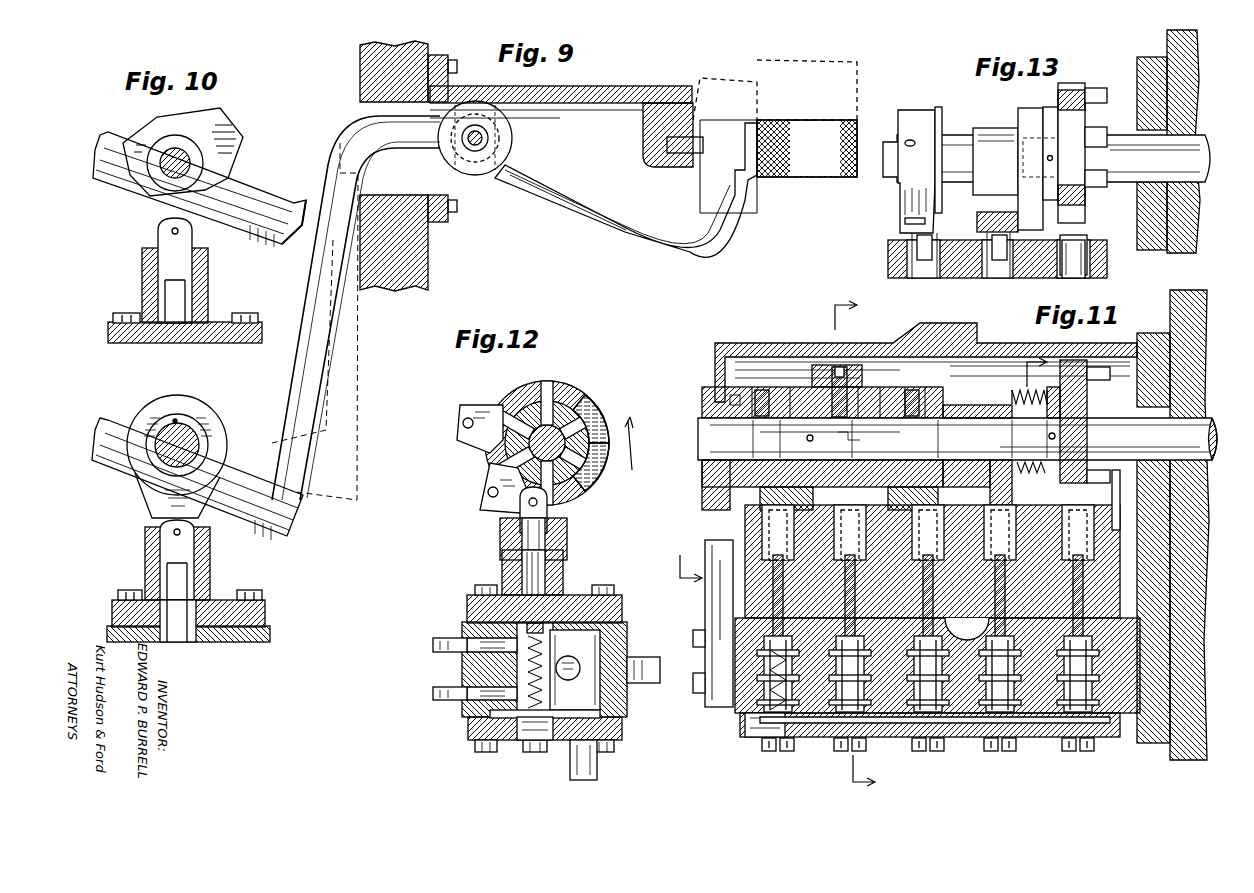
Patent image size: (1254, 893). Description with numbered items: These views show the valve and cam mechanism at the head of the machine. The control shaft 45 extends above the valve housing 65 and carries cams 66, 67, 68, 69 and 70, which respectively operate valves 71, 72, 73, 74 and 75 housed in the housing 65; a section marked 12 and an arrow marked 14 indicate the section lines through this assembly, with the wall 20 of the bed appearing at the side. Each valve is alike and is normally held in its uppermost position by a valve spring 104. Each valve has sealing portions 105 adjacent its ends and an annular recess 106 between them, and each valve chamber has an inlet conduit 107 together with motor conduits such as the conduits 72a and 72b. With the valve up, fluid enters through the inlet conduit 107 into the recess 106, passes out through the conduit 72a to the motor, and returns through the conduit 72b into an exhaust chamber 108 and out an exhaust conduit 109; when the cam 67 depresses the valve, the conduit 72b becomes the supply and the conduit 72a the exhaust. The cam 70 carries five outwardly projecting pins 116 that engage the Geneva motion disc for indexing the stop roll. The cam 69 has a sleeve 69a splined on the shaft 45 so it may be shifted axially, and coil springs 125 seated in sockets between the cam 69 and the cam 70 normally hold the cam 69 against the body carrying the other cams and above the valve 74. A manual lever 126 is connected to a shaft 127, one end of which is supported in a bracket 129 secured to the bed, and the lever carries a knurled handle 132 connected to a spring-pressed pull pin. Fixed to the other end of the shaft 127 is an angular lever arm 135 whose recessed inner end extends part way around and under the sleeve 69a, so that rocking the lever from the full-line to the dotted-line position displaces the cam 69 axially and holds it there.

In FIG. 11, the section line 12- 12 is at (860, 537).
In FIG. 11, the section line 14- 14 is at (863, 481).
In FIG. 9, the wall 20 is at (360, 62).
In FIG. 13, the wall 20 is at (1205, 243).
In FIG. 11, the wall 20 is at (1197, 563).
In FIG. 10, the control shaft 45 is at (157, 183).
In FIG. 9, the control shaft 45 is at (188, 433).
In FIG. 13, the control shaft 45 is at (1197, 137).
In FIG. 11, the control shaft 45 is at (1213, 403).
In FIG. 12, the control shaft 45 is at (487, 453).
In FIG. 10, the valve housing 65 is at (205, 291).
In FIG. 9, the valve housing 65 is at (212, 576).
In FIG. 13, the valve housing 65 is at (888, 260).
In FIG. 11, the valve housing 65 is at (743, 605).
In FIG. 11, the cam 66 is at (762, 493).
In FIG. 11, the cam 67 is at (865, 372).
In FIG. 12, the cam 67 is at (553, 367).
In FIG. 13, the cam 68 is at (903, 220).
In FIG. 11, the cam 68 is at (893, 500).
In FIG. 10, the cam 69 is at (212, 112).
In FIG. 9, the cam 69 is at (147, 493).
In FIG. 13, the cam 69 is at (1033, 223).
In FIG. 11, the cam 69 is at (990, 492).
In FIG. 9, the sleeve 69a is at (175, 420).
In FIG. 13, the sleeve 69a is at (988, 130).
In FIG. 11, the sleeve 69a is at (962, 400).
In FIG. 13, the cam 70 is at (1070, 87).
In FIG. 11, the cam 70 is at (1090, 390).
In FIG. 11, the valve 71 is at (798, 616).
In FIG. 11, the valve 72 is at (872, 616).
In FIG. 12, the valve 72 is at (570, 598).
In FIG. 12, the conduit 72a is at (433, 645).
In FIG. 12, the conduit 72b is at (433, 694).
In FIG. 13, the valve 73 is at (925, 270).
In FIG. 11, the valve 73 is at (950, 616).
In FIG. 10, the valve 74 is at (170, 276).
In FIG. 9, the valve 74 is at (170, 565).
In FIG. 13, the valve 74 is at (995, 270).
In FIG. 11, the valve 74 is at (1022, 616).
In FIG. 13, the valve 75 is at (1070, 260).
In FIG. 11, the valve 75 is at (1100, 618).
In FIG. 11, the valve spring 104 is at (738, 722).
In FIG. 12, the valve spring 104 is at (520, 742).
In FIG. 12, the sealing portion 105 is at (463, 630).
In FIG. 12, the annular recess 106 is at (578, 662).
In FIG. 12, the inlet conduit 107 is at (643, 657).
In FIG. 11, the exhaust chamber 108 is at (963, 737).
In FIG. 12, the exhaust chamber 108 is at (600, 714).
In FIG. 12, the exhaust conduit 109 is at (597, 762).
In FIG. 13, the outwardly projecting pins 116 is at (1100, 96).
In FIG. 11, the coil springs 125 is at (1015, 387).
In FIG. 9, the lever 126 is at (583, 210).
In FIG. 9, the shaft 127 is at (487, 137).
In FIG. 9, the bracket 129 is at (580, 88).
In FIG. 9, the knurled handle 132 is at (797, 173).
In FIG. 10, the angular lever arm 135 is at (270, 263).
In FIG. 9, the angular lever arm 135 is at (320, 148).
In FIG. 13, the angular lever arm 135 is at (990, 177).
In FIG. 11, the angular lever arm 135 is at (962, 457).